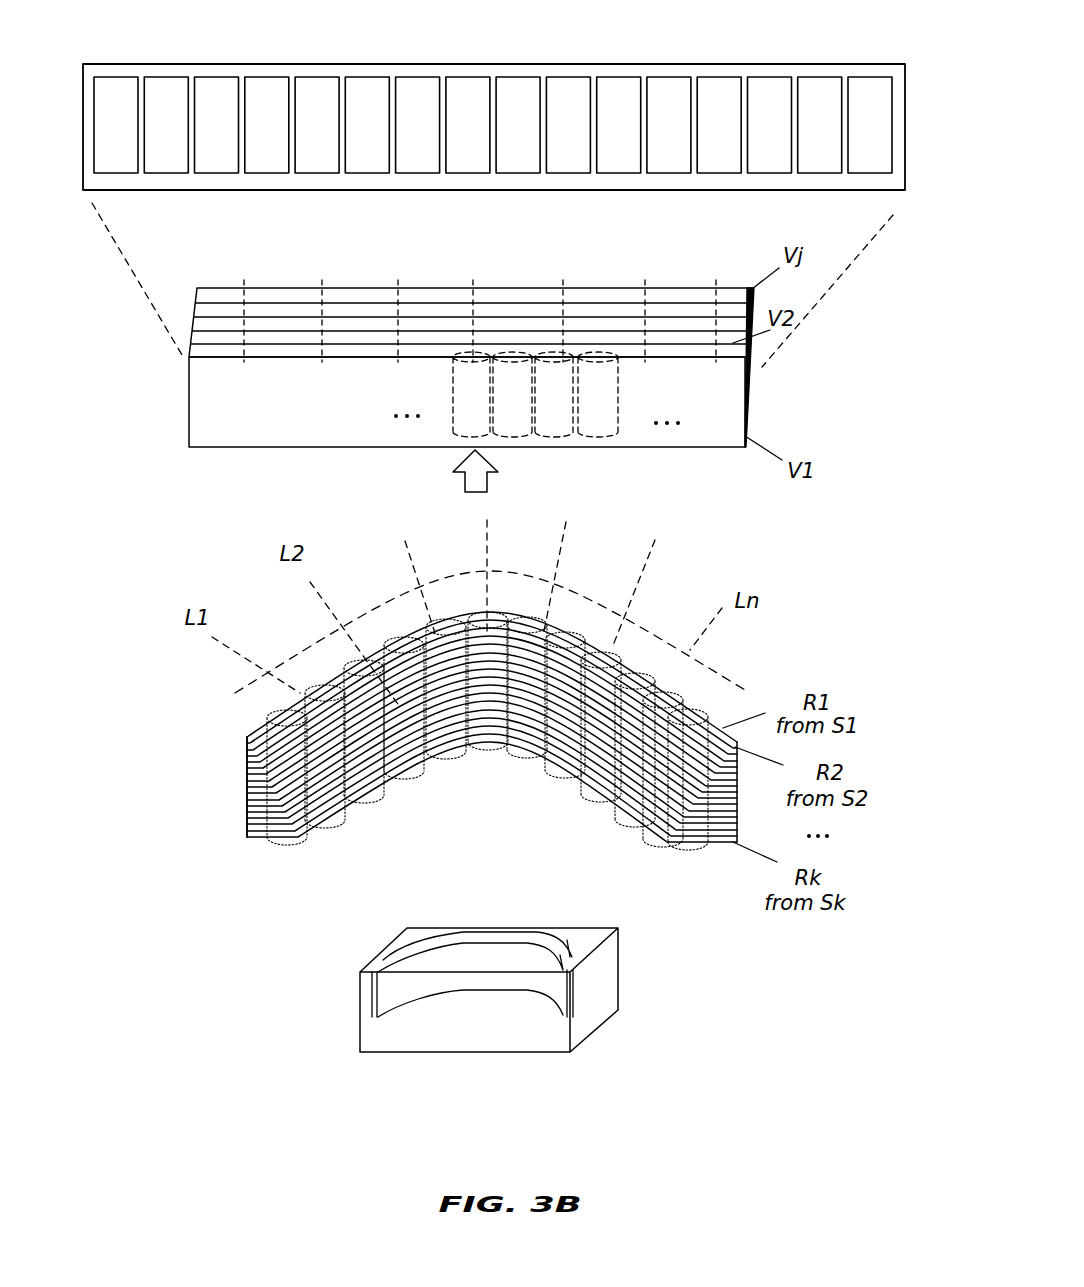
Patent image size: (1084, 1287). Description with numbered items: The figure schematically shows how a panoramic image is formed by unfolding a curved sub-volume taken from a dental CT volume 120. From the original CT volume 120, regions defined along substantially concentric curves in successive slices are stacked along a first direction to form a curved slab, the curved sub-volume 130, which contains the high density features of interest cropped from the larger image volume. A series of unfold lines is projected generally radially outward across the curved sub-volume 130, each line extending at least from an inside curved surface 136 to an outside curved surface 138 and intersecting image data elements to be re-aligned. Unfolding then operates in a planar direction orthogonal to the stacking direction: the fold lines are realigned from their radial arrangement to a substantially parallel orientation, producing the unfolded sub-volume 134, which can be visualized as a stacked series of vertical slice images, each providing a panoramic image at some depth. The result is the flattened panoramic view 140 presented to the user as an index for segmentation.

The panoramic view 140 is at (352, 63).
The unfolded sub-volume 134 is at (189, 387).
The curved sub-volume 130 is at (437, 814).
The outside curved surface 138 is at (243, 817).
The inside curved surface 136 is at (322, 812).
The dental CT volume 120 is at (358, 1033).